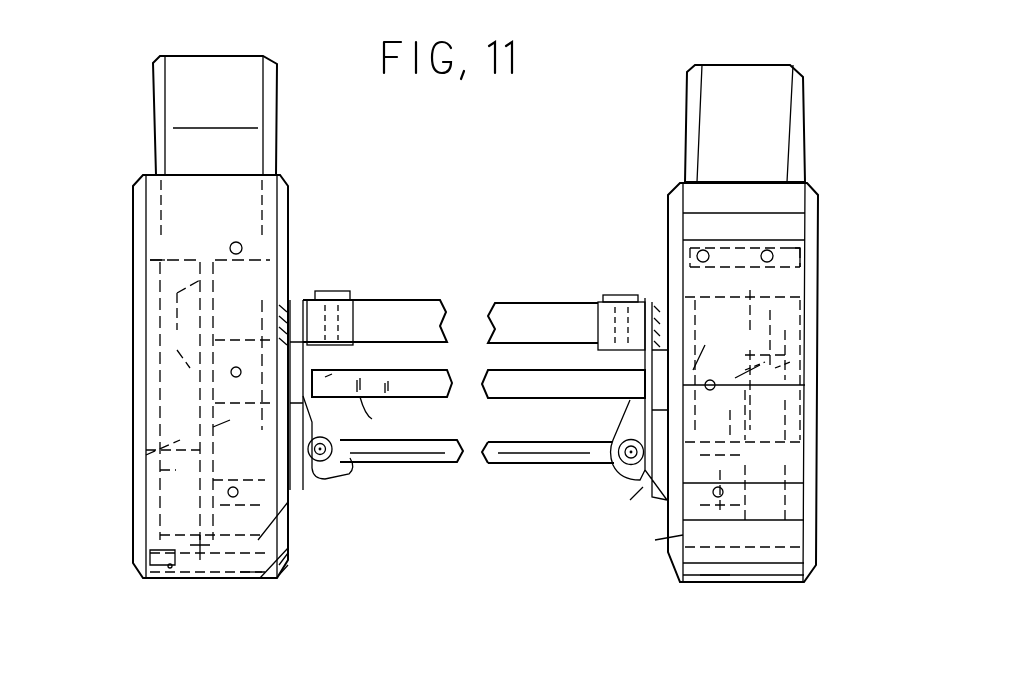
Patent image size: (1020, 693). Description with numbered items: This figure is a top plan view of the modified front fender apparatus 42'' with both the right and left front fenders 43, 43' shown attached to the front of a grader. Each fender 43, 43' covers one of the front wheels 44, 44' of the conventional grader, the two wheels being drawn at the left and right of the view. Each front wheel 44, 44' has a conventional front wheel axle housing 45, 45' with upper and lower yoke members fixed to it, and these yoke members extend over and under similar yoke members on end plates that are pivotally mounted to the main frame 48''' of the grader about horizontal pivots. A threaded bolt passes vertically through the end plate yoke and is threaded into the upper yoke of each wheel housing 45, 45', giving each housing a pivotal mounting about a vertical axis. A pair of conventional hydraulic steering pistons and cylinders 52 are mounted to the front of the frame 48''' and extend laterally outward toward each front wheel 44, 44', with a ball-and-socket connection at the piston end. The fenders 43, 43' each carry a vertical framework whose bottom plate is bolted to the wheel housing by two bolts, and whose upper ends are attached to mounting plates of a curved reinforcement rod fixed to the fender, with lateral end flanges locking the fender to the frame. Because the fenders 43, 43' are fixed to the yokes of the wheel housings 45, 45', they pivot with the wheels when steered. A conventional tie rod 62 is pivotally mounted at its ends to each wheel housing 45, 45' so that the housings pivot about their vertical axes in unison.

The front fender apparatus 42'' is at (388, 295).
The front fender 43 is at (770, 380).
The front fender 43' is at (239, 376).
The front wheel 44 is at (765, 123).
The front wheel 44' is at (241, 115).
The front wheel axle housing 45 is at (574, 420).
The front wheel axle housing 45' is at (219, 395).
The main frame 48''' is at (543, 297).
The hydraulic steering piston and cylinder 52 is at (387, 416).
The tie rod 62 is at (805, 363).